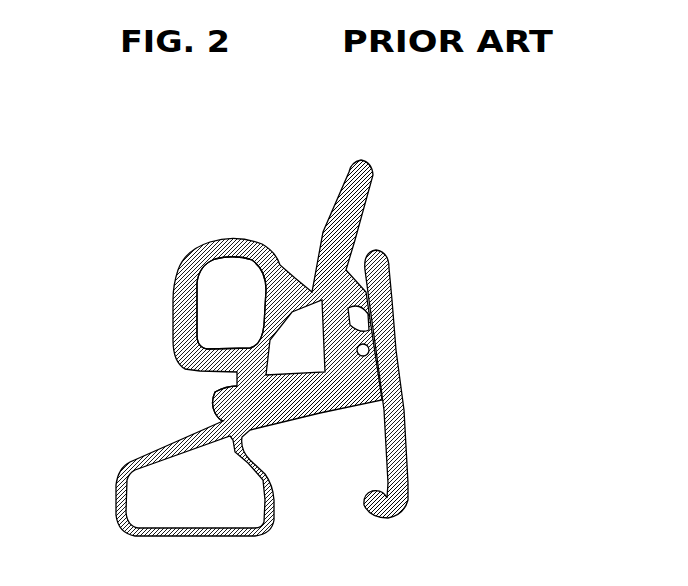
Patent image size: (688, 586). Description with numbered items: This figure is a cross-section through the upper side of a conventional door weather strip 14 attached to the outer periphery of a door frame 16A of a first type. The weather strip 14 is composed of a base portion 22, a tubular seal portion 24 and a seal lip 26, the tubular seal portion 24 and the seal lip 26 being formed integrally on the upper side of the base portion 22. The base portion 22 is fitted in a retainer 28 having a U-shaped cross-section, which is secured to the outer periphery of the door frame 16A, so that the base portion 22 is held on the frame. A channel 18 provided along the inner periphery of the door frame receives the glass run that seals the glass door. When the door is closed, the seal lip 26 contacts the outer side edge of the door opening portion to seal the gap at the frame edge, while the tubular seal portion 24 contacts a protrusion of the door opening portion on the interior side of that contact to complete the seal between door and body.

The door weather strip 14 is at (197, 226).
The tubular seal portion 24 is at (177, 283).
The seal lip 26 is at (340, 184).
The base portion 22 is at (398, 415).
The retainer 28 is at (213, 397).
The door frame 16A is at (401, 354).
The channel 18 is at (382, 443).